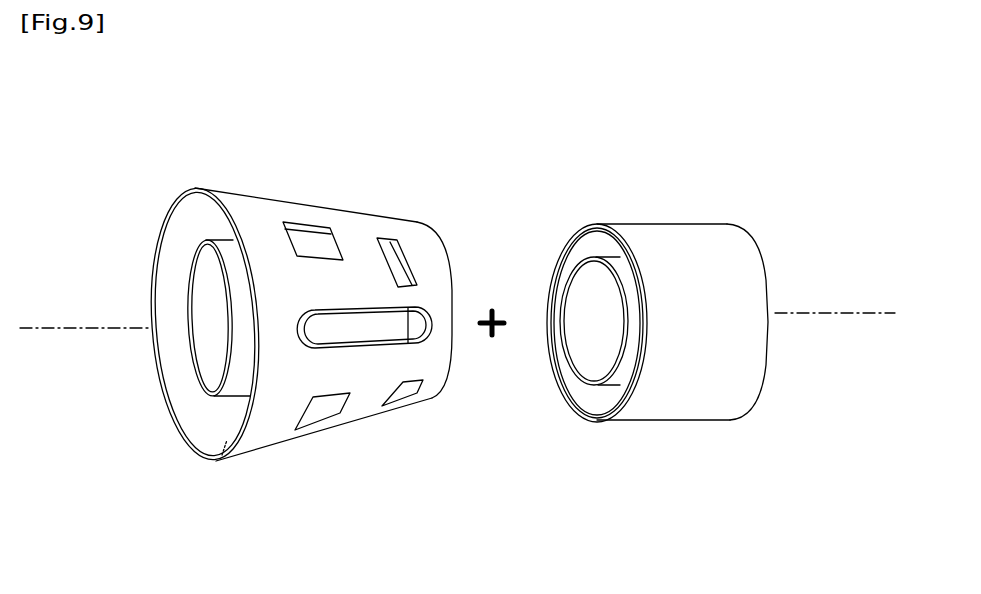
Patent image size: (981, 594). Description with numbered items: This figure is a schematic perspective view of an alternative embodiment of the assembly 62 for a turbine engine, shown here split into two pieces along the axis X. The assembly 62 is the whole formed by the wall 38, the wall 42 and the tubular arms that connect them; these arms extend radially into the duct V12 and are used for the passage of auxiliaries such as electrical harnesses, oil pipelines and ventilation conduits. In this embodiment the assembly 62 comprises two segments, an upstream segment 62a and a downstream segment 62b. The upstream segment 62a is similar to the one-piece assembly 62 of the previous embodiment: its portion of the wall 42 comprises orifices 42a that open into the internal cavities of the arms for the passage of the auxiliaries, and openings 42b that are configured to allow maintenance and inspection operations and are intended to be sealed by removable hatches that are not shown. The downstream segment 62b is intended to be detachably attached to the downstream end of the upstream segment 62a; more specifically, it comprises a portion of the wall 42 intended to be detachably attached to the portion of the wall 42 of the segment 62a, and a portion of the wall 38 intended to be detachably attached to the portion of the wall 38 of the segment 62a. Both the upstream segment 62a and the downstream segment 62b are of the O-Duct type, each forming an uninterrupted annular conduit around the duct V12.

The wall 38 is at (225, 252).
The wall 42 is at (228, 198).
The orifices 42a is at (427, 318).
The openings 42b is at (284, 222).
The assembly 62 is at (758, 188).
The upstream segment 62a is at (373, 190).
The downstream segment 62b is at (598, 205).
The duct V12 is at (222, 455).
The axis X is at (870, 310).